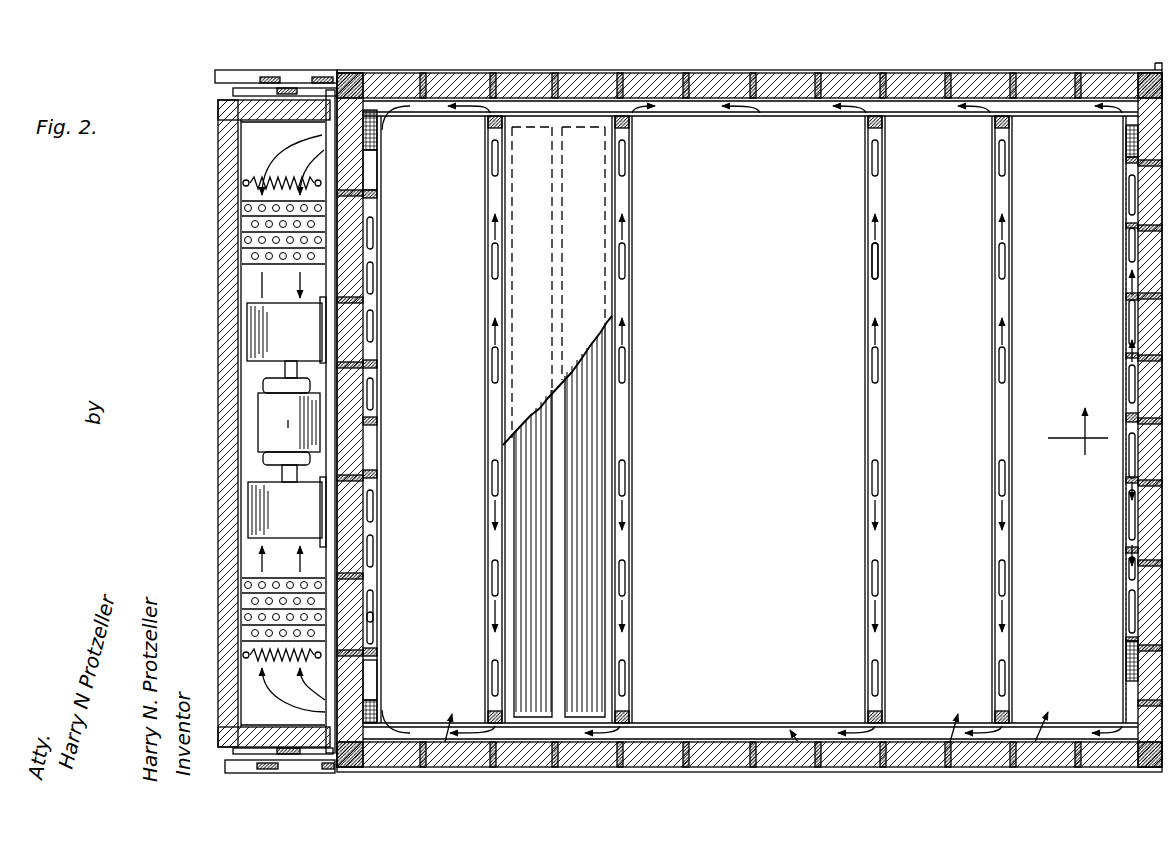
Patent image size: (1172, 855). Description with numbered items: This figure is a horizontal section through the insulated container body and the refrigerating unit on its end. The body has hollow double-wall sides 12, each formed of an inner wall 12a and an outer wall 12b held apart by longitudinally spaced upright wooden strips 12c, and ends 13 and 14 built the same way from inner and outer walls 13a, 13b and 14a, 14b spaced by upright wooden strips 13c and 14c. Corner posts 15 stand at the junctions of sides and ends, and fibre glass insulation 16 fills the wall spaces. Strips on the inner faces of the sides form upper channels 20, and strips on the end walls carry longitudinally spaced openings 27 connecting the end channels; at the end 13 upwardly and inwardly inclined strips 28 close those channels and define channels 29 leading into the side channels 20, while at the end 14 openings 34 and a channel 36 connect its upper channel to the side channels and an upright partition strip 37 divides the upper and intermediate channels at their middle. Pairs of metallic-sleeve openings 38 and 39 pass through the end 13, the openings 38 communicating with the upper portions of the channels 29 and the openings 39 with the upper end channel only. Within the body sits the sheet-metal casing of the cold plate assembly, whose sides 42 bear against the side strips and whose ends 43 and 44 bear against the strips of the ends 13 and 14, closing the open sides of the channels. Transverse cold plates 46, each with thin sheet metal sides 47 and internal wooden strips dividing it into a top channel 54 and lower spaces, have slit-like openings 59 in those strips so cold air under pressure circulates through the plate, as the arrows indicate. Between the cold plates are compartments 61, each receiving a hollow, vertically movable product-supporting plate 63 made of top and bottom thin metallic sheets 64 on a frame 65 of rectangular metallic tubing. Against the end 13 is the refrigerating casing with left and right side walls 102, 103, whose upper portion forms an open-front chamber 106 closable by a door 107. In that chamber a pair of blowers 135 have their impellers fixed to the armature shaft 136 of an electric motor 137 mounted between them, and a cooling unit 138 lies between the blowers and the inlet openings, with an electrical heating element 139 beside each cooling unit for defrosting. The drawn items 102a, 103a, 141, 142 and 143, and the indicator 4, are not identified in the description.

The air flow direction arrow 4 is at (1078, 444).
The side 12 is at (717, 76).
The inner wall 12a is at (793, 101).
The outer wall 12b is at (844, 74).
The upright wooden strips 12c is at (972, 76).
The end 13 is at (376, 566).
The inner wall 13a is at (365, 421).
The outer wall 13b is at (326, 500).
The upright wooden strips 13c is at (366, 472).
The end 14 is at (1150, 194).
The inner wall 14a is at (1130, 268).
The outer wall 14b is at (1136, 323).
The upright wooden strips 14c is at (1140, 387).
The corner posts 15 is at (345, 88).
The fibre glass insulation 16 is at (588, 78).
The upper channel 20 is at (668, 104).
The openings 27 is at (370, 250).
The inclined strips 28 is at (378, 193).
The channels 29 is at (369, 167).
The openings 34 is at (1132, 238).
The channel 36 is at (1130, 158).
The upright partition strip 37 is at (1127, 418).
The openings 38 is at (348, 138).
The openings 39 is at (371, 316).
The sides 42 is at (927, 723).
The end 43 is at (380, 356).
The end 44 is at (1130, 213).
The cold plate 46 is at (482, 556).
The sides 47 is at (878, 293).
The top channel 54 is at (877, 418).
The slit-like openings 59 is at (490, 268).
The compartment 61 is at (426, 770).
The product-supporting plate 63 is at (590, 322).
The metallic sheets 64 is at (520, 407).
The frame 65 is at (560, 407).
The side wall 102 is at (236, 92).
The mounting lug 102a is at (292, 90).
The side wall 103 is at (258, 728).
The mounting lug 103a is at (297, 755).
The open front chamber 106 is at (246, 142).
The door 107 is at (224, 166).
The blowers 135 is at (200, 506).
The armature shaft 136 is at (284, 366).
The electric motor 137 is at (262, 408).
The cooling unit 138 is at (247, 216).
The electrical heating element 139 is at (246, 189).
The cover plate 141 is at (217, 73).
The lug 142 is at (265, 78).
The lug 143 is at (323, 78).